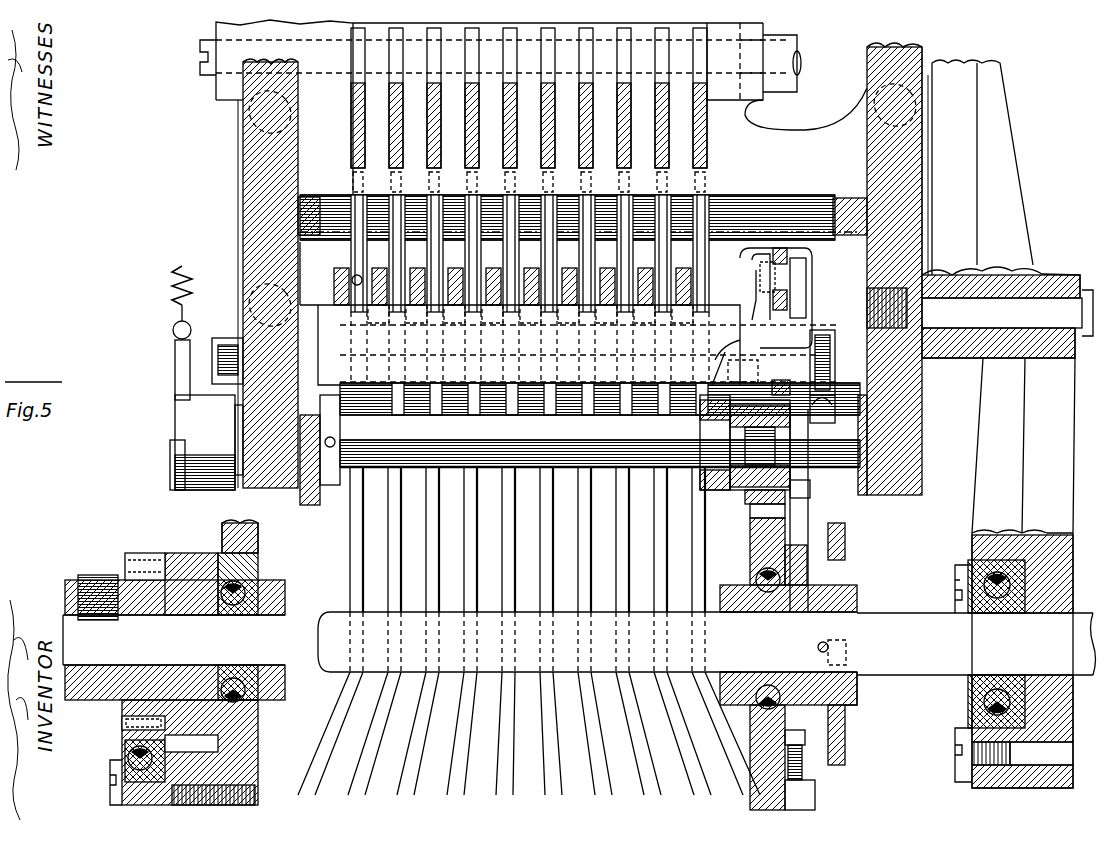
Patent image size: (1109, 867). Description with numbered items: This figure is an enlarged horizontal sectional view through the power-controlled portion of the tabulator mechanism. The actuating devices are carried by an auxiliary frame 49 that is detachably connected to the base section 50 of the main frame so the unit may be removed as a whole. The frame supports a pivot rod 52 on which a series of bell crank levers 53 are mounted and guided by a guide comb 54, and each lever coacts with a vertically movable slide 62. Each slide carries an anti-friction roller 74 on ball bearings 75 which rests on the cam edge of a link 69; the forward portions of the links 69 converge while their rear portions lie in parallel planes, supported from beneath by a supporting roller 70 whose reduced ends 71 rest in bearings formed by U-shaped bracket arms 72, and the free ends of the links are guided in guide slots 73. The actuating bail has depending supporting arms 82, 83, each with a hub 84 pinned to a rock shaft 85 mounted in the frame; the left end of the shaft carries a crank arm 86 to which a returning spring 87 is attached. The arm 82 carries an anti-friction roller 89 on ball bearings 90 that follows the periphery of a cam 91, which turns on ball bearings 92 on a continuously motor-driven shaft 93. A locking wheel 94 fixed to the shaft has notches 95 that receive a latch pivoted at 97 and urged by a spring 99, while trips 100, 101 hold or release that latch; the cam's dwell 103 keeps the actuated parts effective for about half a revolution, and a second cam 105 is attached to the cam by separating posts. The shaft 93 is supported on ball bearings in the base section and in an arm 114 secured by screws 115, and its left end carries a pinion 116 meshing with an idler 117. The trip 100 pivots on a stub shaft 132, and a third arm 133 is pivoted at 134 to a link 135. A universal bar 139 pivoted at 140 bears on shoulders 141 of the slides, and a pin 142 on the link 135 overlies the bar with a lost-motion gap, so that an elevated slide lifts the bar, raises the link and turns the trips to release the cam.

The auxiliary frame 49 is at (243, 158).
The base section 50 is at (258, 545).
The pivot rod 52 is at (216, 80).
The bell crank lever 53 is at (390, 98).
The guide comb 54 is at (800, 122).
The slide 62 is at (338, 275).
The link 69 is at (428, 250).
The supporting roller 70 is at (732, 362).
The reduced ends 71 is at (539, 422).
The U-shaped bracket arms 72 is at (776, 393).
The guide slots 73 is at (398, 196).
The anti-friction roller 74 is at (395, 270).
The ball bearings 75 is at (355, 275).
The supporting arm 82 is at (745, 505).
The supporting arm 83 is at (310, 505).
The hub 84 is at (715, 420).
The rock shaft 85 is at (175, 443).
The crank arm 86 is at (175, 390).
The returning spring 87 is at (191, 285).
The anti-friction roller 89 is at (750, 520).
The ball bearings 90 is at (760, 445).
The cam 91 is at (750, 545).
The ball bearings 92 is at (756, 578).
The motor-driven shaft 93 is at (579, 643).
The locking wheel 94 is at (798, 545).
The notches 95 is at (807, 744).
The pivot 97 is at (848, 657).
The spring 99 is at (802, 765).
The trip 100 is at (808, 513).
The trip 101 is at (833, 406).
The dwell 103 is at (750, 803).
The second cam 105 is at (838, 552).
The arm 114 is at (1003, 424).
The screws 115 is at (1007, 312).
The pinion 116 is at (124, 575).
The idler 117 is at (125, 741).
The stub shaft 132 is at (838, 480).
The third arm 133 is at (806, 255).
The pivot 134 is at (750, 250).
The link 135 is at (780, 248).
The universal bar 139 is at (589, 345).
The pivot 140 is at (210, 356).
The shoulders 141 is at (688, 308).
The pin 142 is at (766, 302).